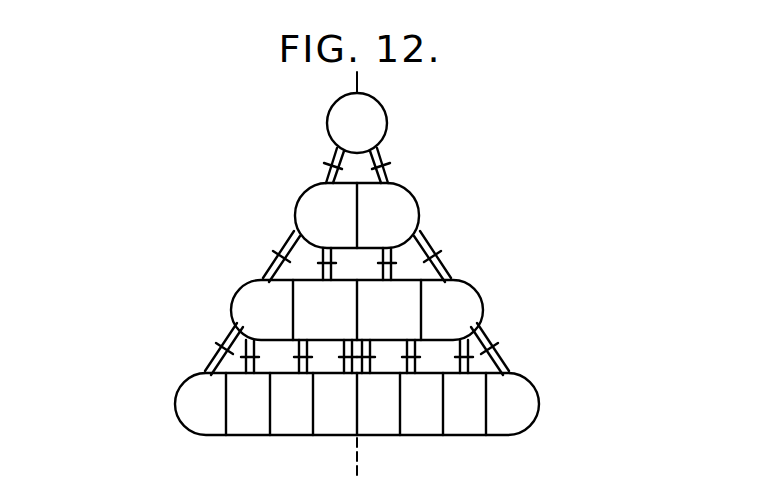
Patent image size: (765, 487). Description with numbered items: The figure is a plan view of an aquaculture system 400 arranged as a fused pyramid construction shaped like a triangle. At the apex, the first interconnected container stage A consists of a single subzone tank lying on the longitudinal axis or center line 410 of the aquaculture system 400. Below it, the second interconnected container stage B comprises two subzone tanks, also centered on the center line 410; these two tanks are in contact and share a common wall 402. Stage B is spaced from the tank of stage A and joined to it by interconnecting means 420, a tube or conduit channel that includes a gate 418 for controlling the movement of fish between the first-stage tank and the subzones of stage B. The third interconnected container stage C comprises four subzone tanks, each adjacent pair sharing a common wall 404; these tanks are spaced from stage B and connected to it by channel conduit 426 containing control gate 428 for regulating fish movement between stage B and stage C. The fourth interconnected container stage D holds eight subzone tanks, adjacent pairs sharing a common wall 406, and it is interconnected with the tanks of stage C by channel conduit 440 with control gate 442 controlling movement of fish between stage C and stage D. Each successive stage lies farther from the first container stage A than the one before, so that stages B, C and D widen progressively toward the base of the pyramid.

The aquaculture system 400 is at (300, 160).
The common wall 402 is at (326, 189).
The common wall 404 is at (270, 281).
The common wall 406 is at (220, 381).
The center line 410 is at (357, 79).
The gate 418 is at (390, 166).
The interconnecting means 420 is at (384, 157).
The channel conduit 426 is at (425, 240).
The control gate 428 is at (442, 261).
The channel conduit 440 is at (496, 333).
The control gate 442 is at (494, 350).
The first interconnected container stage A is at (331, 111).
The second interconnected container stage B is at (421, 197).
The third interconnected container stage C is at (483, 297).
The fourth interconnected container stage D is at (540, 397).